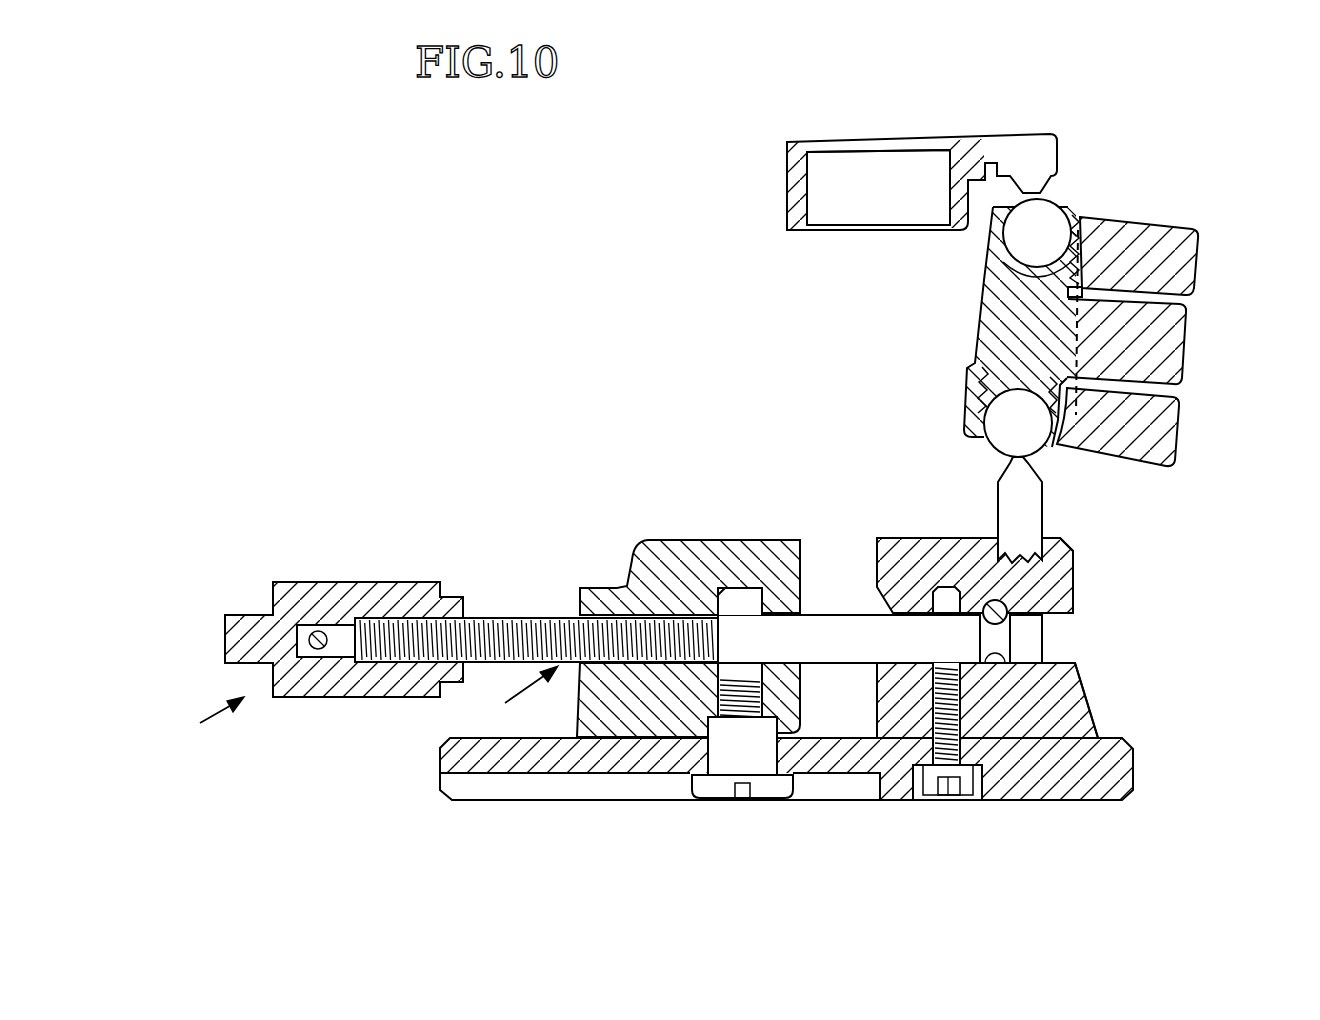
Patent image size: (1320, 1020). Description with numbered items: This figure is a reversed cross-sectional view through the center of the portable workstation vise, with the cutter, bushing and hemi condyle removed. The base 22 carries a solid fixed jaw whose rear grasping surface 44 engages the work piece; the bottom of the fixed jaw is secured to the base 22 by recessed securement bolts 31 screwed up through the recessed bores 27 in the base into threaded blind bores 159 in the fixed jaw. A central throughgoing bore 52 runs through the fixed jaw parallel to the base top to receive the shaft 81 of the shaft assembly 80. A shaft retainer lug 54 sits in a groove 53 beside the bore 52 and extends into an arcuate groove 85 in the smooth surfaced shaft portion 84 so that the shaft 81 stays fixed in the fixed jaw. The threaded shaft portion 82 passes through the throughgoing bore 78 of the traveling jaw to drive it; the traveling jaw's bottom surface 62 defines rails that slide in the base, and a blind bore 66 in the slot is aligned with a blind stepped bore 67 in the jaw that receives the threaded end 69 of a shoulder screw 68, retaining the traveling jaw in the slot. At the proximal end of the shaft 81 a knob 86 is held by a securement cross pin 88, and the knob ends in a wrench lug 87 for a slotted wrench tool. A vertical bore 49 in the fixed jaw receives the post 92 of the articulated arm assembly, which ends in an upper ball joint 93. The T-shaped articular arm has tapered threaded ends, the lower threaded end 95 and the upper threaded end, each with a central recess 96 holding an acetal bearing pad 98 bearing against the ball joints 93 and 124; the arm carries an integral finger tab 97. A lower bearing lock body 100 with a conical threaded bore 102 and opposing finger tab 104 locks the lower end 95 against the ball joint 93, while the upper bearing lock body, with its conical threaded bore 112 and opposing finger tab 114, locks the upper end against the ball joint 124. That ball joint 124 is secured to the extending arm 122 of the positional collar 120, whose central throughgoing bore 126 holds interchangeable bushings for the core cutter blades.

The base 22 is at (1097, 800).
The recessed bores 27 is at (920, 800).
The recessed securement bolts 31 is at (965, 792).
The rear grasping surface 44 is at (812, 560).
The vertical bore 49 is at (1078, 553).
The central throughgoing bore 52 is at (1060, 660).
The groove 53 is at (1005, 598).
The shaft retainer lug 54 is at (1008, 612).
The bottom surface 62 is at (672, 732).
The blind bore 66 is at (775, 800).
The blind stepped bore 67 is at (540, 778).
The shoulder screw 68 is at (723, 790).
The threaded end 69 is at (795, 785).
The throughgoing bore 78 is at (662, 600).
The shaft assembly 80 is at (202, 724).
The shaft 81 is at (514, 695).
The threaded shaft portion 82 is at (525, 620).
The smooth surfaced shaft portion 84 is at (830, 612).
The arcuate groove 85 is at (1000, 640).
The knob 86 is at (425, 582).
The wrench lug 87 is at (237, 616).
The securement cross pin 88 is at (325, 637).
The post 92 is at (1044, 516).
The upper ball joint 93 is at (1000, 440).
The lower threaded end 95 is at (978, 393).
The central recess 96 is at (988, 292).
The acetal bearing pad 98 is at (1005, 357).
The finger tab 97 is at (1190, 356).
The lower bearing lock body 100 is at (972, 413).
The conical threaded bore 102 is at (1060, 448).
The opposing finger tab 104 is at (1180, 450).
The conical threaded bore 112 is at (1080, 222).
The opposing finger tab 114 is at (1200, 270).
The positional collar 120 is at (787, 147).
The extending arm 122 is at (1053, 192).
The ball joint 124 is at (1017, 242).
The central throughgoing bore 126 is at (895, 206).
The threaded blind bores 159 is at (972, 720).